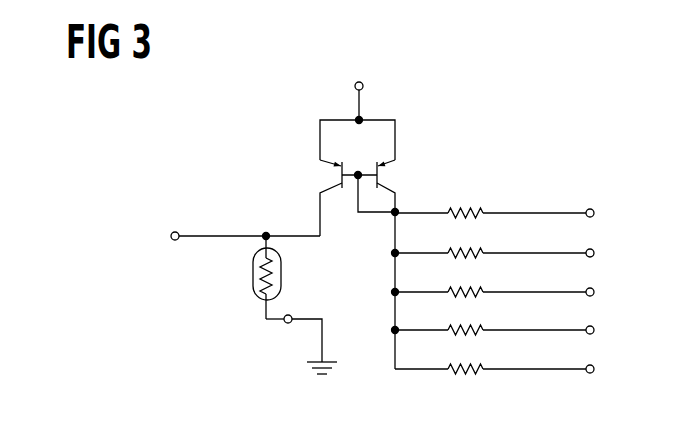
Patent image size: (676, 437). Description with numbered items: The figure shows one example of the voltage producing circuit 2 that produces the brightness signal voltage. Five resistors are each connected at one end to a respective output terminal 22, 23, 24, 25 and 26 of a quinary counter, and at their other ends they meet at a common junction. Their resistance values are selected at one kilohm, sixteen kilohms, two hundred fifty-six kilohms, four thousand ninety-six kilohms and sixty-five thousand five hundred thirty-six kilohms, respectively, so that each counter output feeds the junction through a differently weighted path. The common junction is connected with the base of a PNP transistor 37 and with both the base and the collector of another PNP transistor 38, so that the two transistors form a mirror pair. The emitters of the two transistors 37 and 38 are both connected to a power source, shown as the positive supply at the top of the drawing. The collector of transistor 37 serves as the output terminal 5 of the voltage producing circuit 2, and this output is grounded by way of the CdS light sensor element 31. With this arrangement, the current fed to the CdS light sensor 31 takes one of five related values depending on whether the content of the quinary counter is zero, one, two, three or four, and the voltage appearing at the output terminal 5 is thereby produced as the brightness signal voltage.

The voltage producing circuit 2 is at (473, 133).
The output terminal 5 is at (174, 231).
The CdS light sensor element 31 is at (254, 287).
The PNP transistor 37 is at (336, 175).
The PNP transistor 38 is at (388, 175).
The output terminal of quinary counter 22 is at (594, 372).
The output terminal of quinary counter 23 is at (594, 333).
The output terminal of quinary counter 24 is at (594, 295).
The output terminal of quinary counter 25 is at (594, 256).
The output terminal of quinary counter 26 is at (594, 216).